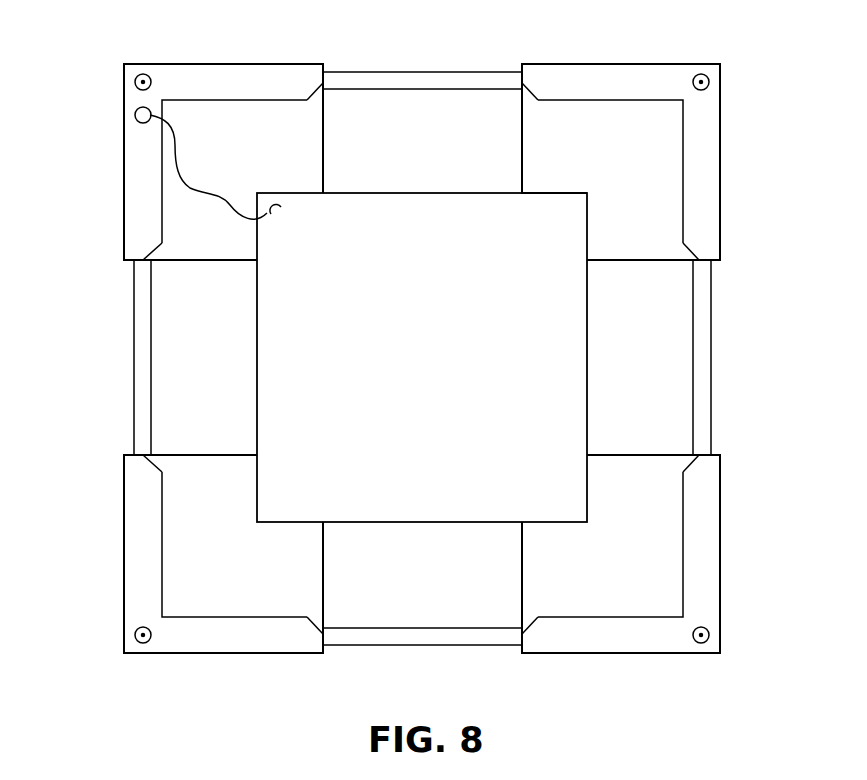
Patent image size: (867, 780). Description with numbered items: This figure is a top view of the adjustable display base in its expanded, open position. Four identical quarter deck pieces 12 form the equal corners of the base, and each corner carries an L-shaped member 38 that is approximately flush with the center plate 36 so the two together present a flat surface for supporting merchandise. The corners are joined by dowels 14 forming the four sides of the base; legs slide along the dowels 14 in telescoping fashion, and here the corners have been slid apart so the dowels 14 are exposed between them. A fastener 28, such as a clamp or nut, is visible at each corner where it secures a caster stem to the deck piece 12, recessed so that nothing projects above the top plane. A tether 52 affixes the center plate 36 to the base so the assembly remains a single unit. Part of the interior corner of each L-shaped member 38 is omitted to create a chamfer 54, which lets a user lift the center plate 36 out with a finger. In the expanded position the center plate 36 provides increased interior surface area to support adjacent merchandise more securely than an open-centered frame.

The quarter deck piece 12 is at (212, 113).
The dowel 14 is at (424, 72).
The fastener 28 is at (143, 73).
The center plate 36 is at (533, 308).
The L-shaped member 38 is at (645, 78).
The tether 52 is at (192, 188).
The chamfer 54 is at (306, 93).